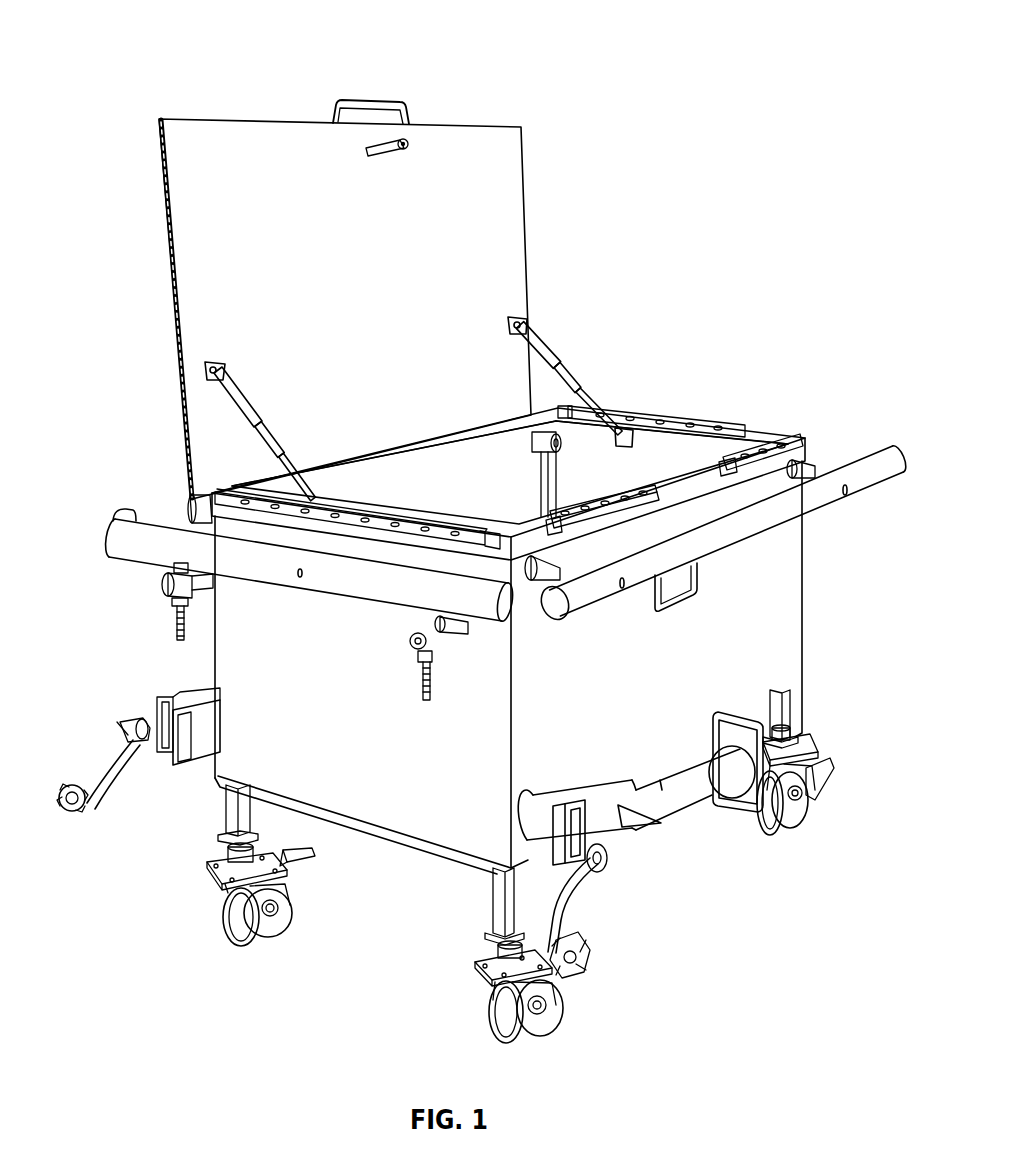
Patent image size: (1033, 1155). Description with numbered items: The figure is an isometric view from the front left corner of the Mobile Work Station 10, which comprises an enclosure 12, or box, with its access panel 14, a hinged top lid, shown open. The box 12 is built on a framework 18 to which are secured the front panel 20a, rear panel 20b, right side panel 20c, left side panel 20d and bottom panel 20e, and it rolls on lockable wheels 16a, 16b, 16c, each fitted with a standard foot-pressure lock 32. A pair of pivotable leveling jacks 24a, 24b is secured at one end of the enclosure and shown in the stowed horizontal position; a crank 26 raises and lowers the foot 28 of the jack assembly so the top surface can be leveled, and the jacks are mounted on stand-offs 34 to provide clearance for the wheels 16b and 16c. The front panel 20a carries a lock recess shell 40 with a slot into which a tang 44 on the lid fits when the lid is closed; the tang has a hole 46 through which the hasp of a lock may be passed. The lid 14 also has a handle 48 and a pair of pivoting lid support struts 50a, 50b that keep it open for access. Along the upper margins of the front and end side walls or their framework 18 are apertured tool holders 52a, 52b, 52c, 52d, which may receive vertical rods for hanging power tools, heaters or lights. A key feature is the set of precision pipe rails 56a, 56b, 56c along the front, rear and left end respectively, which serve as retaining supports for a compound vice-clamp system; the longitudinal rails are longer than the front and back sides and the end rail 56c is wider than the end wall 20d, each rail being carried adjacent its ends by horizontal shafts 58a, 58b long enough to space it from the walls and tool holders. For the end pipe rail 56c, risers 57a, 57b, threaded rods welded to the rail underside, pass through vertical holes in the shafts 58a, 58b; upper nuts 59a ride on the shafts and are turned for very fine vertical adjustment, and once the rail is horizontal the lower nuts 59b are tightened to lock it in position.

The Mobile Work Station 10 is at (138, 44).
The enclosure 12 is at (808, 599).
The access panel 14 is at (470, 240).
The lockable wheel 16a is at (826, 761).
The lockable wheel 16b is at (584, 1004).
The lockable wheel 16c is at (206, 856).
The framework 18 is at (540, 482).
The front panel 20a is at (700, 685).
The rear panel 20b is at (465, 475).
The right side panel 20c is at (690, 455).
The left side panel 20d is at (290, 740).
The bottom panel 20e is at (402, 843).
The pivotable leveling jack 24a is at (708, 769).
The pivotable leveling jack 24b is at (165, 684).
The crank 26 is at (104, 780).
The foot 28 is at (725, 735).
The foot-pressure lock 32 is at (300, 850).
The stand-off 34 is at (548, 803).
The lock recess shell 40 is at (690, 597).
The tang 44 is at (366, 150).
The hole 46 is at (406, 147).
The handle 48 is at (372, 100).
The pivoting lid support strut 50a is at (246, 395).
The pivoting lid support strut 50b is at (548, 343).
The apertured tool holder 52a is at (607, 503).
The apertured tool holder 52b is at (768, 440).
The apertured tool holder 52c is at (372, 511).
The apertured tool holder 52d is at (640, 408).
The front pipe rail 56a is at (872, 455).
The rear pipe rail 56b is at (170, 498).
The left end pipe rail 56c is at (135, 548).
The riser 57a is at (170, 612).
The riser 57b is at (425, 695).
The horizontal shaft 58a is at (215, 590).
The horizontal shaft 58b is at (810, 465).
The upper nut 59a is at (408, 641).
The lower nut 59b is at (415, 660).